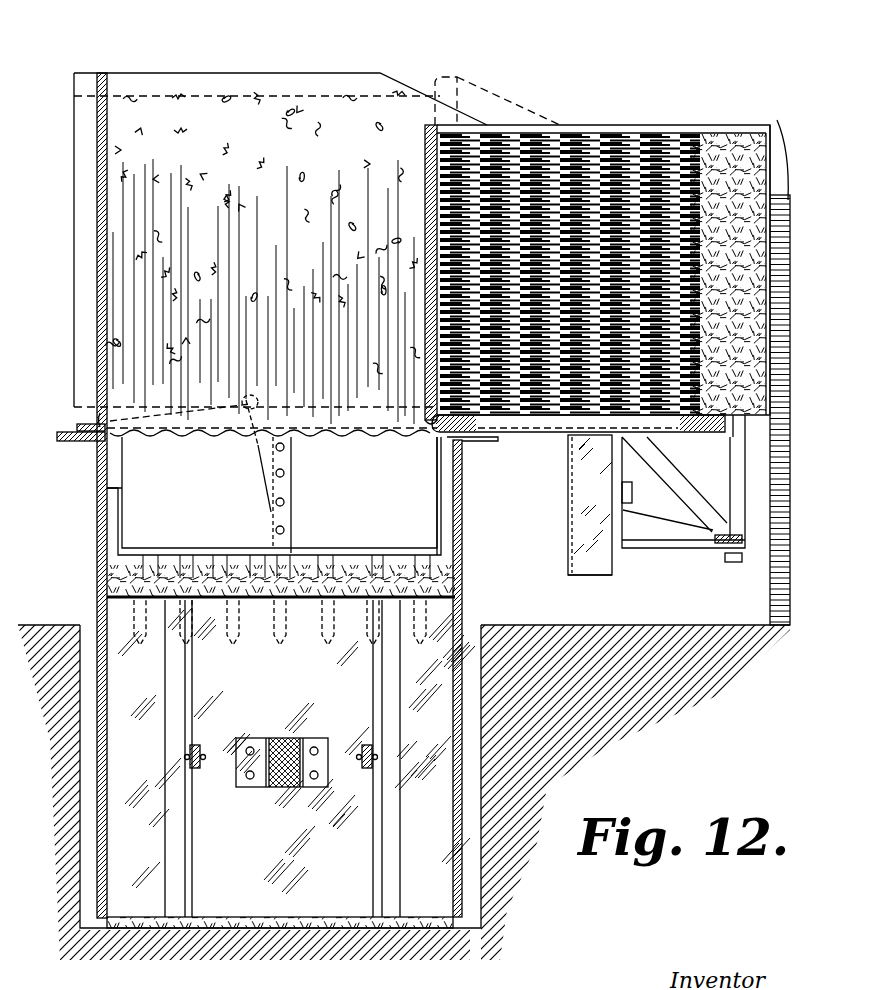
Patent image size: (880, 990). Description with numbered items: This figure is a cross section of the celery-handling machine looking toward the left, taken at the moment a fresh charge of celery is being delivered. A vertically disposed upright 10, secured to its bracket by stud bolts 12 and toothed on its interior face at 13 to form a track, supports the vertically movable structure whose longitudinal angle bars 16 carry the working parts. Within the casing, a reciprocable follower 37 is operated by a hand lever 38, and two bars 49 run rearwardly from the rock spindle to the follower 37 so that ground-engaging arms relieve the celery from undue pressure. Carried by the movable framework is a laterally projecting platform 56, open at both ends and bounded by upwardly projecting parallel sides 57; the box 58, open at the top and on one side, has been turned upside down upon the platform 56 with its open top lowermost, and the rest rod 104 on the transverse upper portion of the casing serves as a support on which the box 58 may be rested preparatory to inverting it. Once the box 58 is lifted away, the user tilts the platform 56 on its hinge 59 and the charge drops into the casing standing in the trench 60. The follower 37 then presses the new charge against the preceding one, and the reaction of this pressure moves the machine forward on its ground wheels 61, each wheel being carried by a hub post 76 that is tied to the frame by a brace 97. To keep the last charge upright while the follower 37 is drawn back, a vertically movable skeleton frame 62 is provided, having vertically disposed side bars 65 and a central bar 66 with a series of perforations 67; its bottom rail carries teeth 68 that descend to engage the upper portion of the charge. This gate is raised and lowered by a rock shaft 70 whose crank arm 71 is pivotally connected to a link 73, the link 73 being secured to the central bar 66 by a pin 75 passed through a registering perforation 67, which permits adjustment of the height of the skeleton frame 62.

The upright 10 is at (588, 576).
The stud bolts 12 is at (632, 493).
The teeth of upright 13 is at (567, 530).
The longitudinal angle bars 16 is at (78, 446).
The follower 37 is at (291, 684).
The hand lever 38 is at (285, 745).
The bars 49 is at (196, 769).
The platform 56 is at (535, 430).
The sides of platform 57 is at (248, 73).
The box 58 is at (655, 125).
The hinge 59 is at (458, 438).
The trench 60 is at (90, 926).
The ground wheels 61 is at (775, 594).
The skeleton frame 62 is at (274, 496).
The side bars 65 is at (122, 497).
The central bar 66 is at (290, 455).
The perforations 67 is at (283, 476).
The teeth 68 is at (233, 645).
The rock shaft 70 is at (102, 421).
The crank arm 71 is at (190, 405).
The link 73 is at (258, 447).
The pin 75 is at (283, 506).
The hub post 76 is at (738, 463).
The brace 97 is at (688, 492).
The rest rod 104 is at (778, 125).